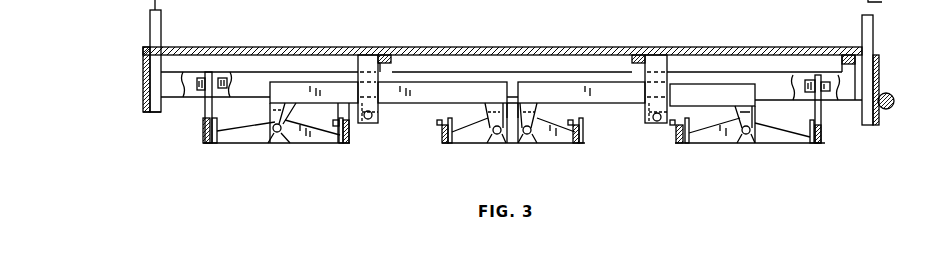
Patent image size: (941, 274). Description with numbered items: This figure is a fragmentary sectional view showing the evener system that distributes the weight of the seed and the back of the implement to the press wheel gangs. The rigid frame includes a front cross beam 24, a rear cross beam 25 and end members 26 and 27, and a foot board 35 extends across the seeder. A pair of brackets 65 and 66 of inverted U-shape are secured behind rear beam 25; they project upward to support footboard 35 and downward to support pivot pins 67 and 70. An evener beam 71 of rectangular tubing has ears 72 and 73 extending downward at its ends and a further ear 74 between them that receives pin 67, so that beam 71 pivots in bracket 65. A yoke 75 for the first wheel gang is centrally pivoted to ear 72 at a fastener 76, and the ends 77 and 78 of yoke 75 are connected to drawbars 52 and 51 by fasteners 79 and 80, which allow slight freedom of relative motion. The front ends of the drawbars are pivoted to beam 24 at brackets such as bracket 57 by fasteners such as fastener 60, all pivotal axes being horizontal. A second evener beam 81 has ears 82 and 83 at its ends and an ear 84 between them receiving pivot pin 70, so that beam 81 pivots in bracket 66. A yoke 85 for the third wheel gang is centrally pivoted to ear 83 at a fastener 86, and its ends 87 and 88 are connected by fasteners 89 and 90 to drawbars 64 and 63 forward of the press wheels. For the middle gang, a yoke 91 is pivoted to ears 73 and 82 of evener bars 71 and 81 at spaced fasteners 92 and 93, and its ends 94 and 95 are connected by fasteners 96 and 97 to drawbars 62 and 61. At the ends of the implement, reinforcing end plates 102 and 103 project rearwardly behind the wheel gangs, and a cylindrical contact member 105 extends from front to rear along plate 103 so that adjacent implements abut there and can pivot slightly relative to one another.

The front cross beam 24 is at (190, 72).
The rear cross beam 25 is at (605, 72).
The end member 26 is at (150, 25).
The end member 27 is at (873, 31).
The foot board 35 is at (474, 47).
The first drawbar 51 is at (347, 148).
The second drawbar 52 is at (210, 140).
The bracket 57 is at (207, 75).
The fastener 60 is at (223, 80).
The drawbar 61 is at (584, 148).
The drawbar 62 is at (444, 146).
The drawbar 63 is at (822, 148).
The drawbar 64 is at (680, 148).
The bracket 65 is at (366, 57).
The bracket 66 is at (657, 57).
The pivot pin 67 is at (368, 120).
The pivot pin 70 is at (657, 122).
The evener beam 71 is at (408, 88).
The ear 72 is at (283, 138).
The ear 73 is at (498, 135).
The ear 74 is at (379, 108).
The yoke 75 is at (249, 148).
The fastener 76 is at (276, 134).
The yoke end 77 is at (214, 146).
The yoke end 78 is at (342, 148).
The fastener 79 is at (203, 124).
The fastener 80 is at (333, 123).
The second evener beam 81 is at (700, 88).
The ear 82 is at (540, 118).
The ear 83 is at (741, 120).
The ear 84 is at (650, 115).
The yoke 85 is at (753, 148).
The fastener 86 is at (745, 136).
The yoke end 87 is at (688, 148).
The yoke end 88 is at (816, 147).
The fastener 89 is at (700, 106).
The fastener 90 is at (810, 126).
The yoke 91 is at (550, 146).
The fastener 92 is at (503, 140).
The fastener 93 is at (527, 135).
The yoke end 94 is at (451, 146).
The yoke end 95 is at (577, 146).
The fastener 96 is at (442, 125).
The fastener 97 is at (580, 128).
The reinforcing end plate 102 is at (148, 98).
The reinforcing end plate 103 is at (879, 118).
The cylindrical contact member 105 is at (893, 98).